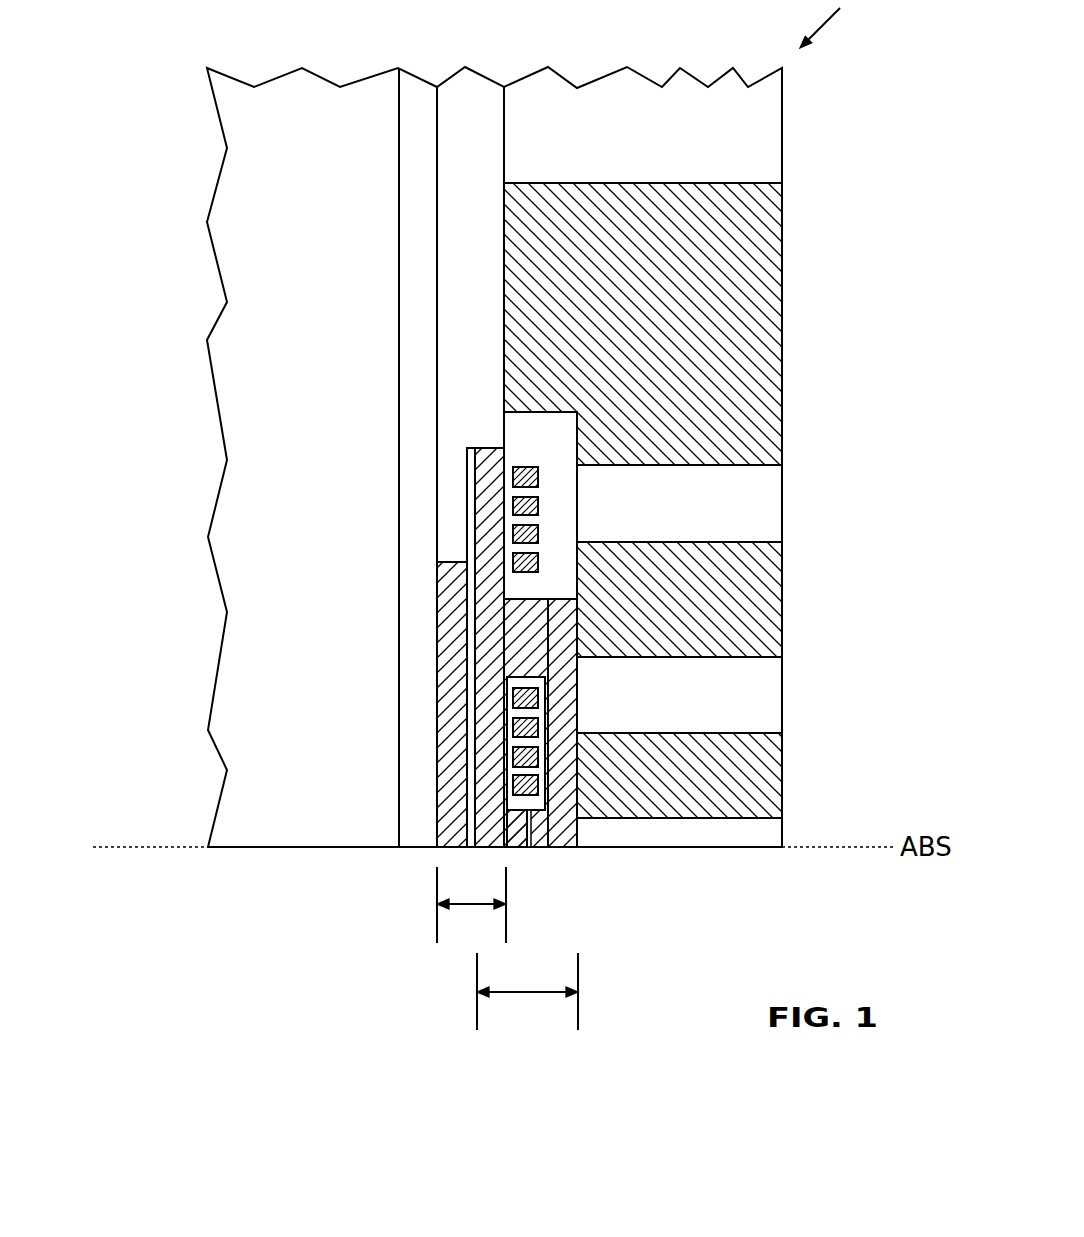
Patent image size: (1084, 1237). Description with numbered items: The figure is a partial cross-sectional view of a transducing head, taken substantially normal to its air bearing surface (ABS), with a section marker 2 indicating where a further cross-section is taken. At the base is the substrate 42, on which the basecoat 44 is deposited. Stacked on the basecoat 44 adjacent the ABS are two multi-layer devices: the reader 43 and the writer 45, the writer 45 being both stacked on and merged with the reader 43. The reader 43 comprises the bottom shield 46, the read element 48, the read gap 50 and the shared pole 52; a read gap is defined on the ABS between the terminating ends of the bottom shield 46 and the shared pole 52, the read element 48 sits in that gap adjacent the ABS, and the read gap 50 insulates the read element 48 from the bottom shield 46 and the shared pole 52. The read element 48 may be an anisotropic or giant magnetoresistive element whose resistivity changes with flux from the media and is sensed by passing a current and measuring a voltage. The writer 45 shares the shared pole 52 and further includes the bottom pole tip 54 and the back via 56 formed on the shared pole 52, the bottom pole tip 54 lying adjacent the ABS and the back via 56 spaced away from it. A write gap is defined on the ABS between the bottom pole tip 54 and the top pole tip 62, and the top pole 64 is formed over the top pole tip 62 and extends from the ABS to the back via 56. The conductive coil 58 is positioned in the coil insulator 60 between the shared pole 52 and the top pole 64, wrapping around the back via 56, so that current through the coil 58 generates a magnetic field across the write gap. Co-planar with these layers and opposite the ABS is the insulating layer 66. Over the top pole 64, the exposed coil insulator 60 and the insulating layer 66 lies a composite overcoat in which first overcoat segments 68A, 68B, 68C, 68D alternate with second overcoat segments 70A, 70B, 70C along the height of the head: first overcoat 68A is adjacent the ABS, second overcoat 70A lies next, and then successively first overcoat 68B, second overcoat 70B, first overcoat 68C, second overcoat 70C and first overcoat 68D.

The section line 2- 2 is at (672, 70).
The substrate 42 is at (285, 752).
The reader 43 is at (471, 911).
The basecoat 44 is at (418, 828).
The writer 45 is at (527, 995).
The bottom shield 46 is at (455, 798).
The read element 48 is at (470, 838).
The read gap 50 is at (470, 692).
The shared pole 52 is at (488, 648).
The bottom pole tip 54 is at (517, 840).
The back via 56 is at (530, 618).
The conductive coil 58 is at (537, 723).
The coil insulator 60 is at (553, 543).
The top pole tip 62 is at (538, 838).
The top pole 64 is at (570, 840).
The insulating layer 66 is at (475, 400).
The first overcoat 68A is at (753, 832).
The first overcoat 68B is at (753, 695).
The first overcoat 68C is at (753, 505).
The first overcoat 68D is at (753, 133).
The second overcoat 70A is at (753, 775).
The second overcoat 70B is at (753, 600).
The second overcoat 70C is at (753, 318).